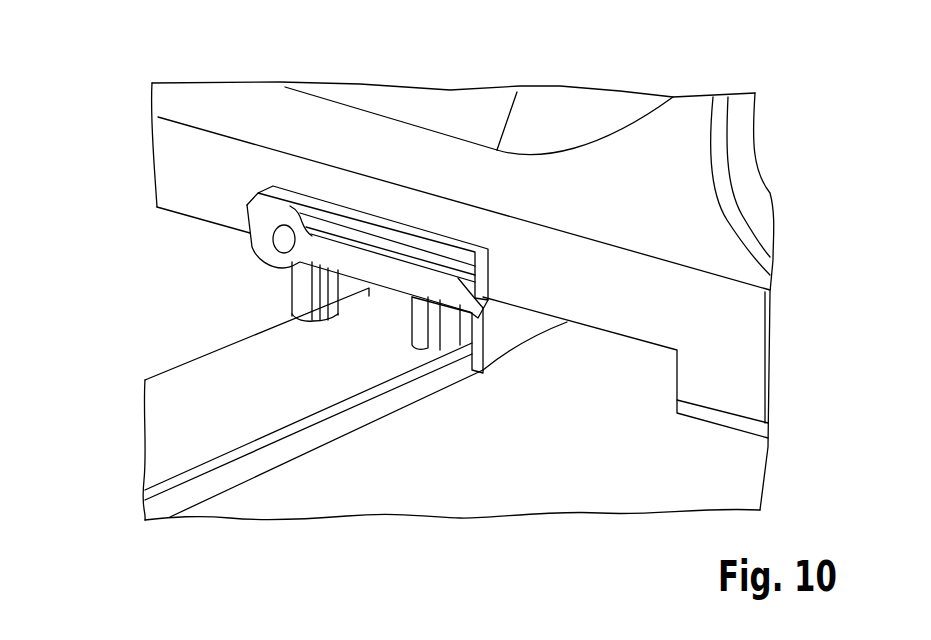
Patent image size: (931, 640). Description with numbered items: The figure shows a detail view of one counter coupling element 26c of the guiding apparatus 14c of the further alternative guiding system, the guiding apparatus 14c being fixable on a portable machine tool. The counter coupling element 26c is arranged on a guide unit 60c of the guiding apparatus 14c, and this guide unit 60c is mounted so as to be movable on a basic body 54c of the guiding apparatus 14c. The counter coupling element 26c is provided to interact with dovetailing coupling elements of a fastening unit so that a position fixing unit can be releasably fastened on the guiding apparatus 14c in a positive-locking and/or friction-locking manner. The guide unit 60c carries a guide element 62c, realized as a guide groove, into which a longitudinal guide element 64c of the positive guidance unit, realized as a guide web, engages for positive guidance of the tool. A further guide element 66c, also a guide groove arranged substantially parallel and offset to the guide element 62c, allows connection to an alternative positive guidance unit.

The guiding apparatus 14c is at (127, 77).
The basic body 54c is at (313, 128).
The counter coupling element 26c is at (318, 251).
The guide unit 60c is at (264, 297).
The further guide element 66c is at (290, 316).
The guide element 62c is at (418, 330).
The longitudinal guide element 64c is at (189, 491).